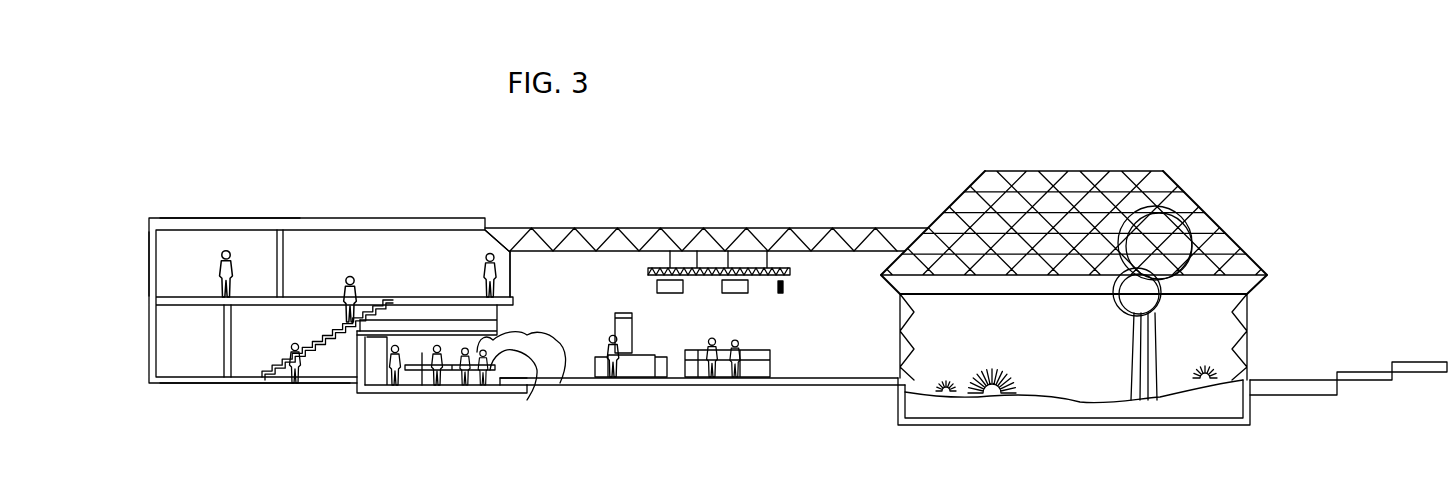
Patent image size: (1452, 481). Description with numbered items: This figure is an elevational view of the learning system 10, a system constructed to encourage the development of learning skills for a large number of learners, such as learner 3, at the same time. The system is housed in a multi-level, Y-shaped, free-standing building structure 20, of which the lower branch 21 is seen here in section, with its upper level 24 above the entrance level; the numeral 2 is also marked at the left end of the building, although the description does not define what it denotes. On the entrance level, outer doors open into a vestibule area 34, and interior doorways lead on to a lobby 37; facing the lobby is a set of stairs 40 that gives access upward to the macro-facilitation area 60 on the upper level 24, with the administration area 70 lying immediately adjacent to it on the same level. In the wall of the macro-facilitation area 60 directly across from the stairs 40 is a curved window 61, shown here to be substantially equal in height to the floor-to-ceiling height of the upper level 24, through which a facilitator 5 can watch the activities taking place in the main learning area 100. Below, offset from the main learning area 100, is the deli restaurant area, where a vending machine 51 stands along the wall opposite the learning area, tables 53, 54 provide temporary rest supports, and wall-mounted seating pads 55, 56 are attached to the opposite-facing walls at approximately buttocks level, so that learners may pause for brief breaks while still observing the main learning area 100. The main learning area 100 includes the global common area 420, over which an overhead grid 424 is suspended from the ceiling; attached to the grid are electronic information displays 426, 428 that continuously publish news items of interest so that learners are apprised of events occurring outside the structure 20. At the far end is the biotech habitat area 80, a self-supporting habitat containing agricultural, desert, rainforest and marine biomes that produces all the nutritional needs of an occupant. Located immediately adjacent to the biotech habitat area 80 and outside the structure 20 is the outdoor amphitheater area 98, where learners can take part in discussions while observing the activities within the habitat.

The multi-story building 2 is at (136, 338).
The learner 3 is at (603, 337).
The facilitator 5 is at (485, 278).
The learning system 10 is at (1046, 147).
The free-standing building structure 20 is at (718, 176).
The lower branch 21 is at (292, 203).
The upper level 24 is at (134, 260).
The vestibule area 34 is at (182, 390).
The lobby 37 is at (252, 348).
The set of stairs 40 is at (297, 360).
The vending machine 51 is at (406, 332).
The table 53 is at (453, 350).
The table 54 is at (410, 388).
The wall-mounted seating pad 55 is at (525, 390).
The wall-mounted seating pad 56 is at (566, 357).
The macro-facilitation area 60 is at (396, 213).
The curved window 61 is at (514, 272).
The administration area 70 is at (216, 214).
The biotech habitat area 80 is at (1050, 420).
The outdoor amphitheater area 98 is at (1345, 328).
The main learning area 100 is at (808, 352).
The global common area 420 is at (712, 392).
The overhead grid 424 is at (796, 266).
The electronic information display 426 is at (786, 289).
The electronic information display 428 is at (656, 289).